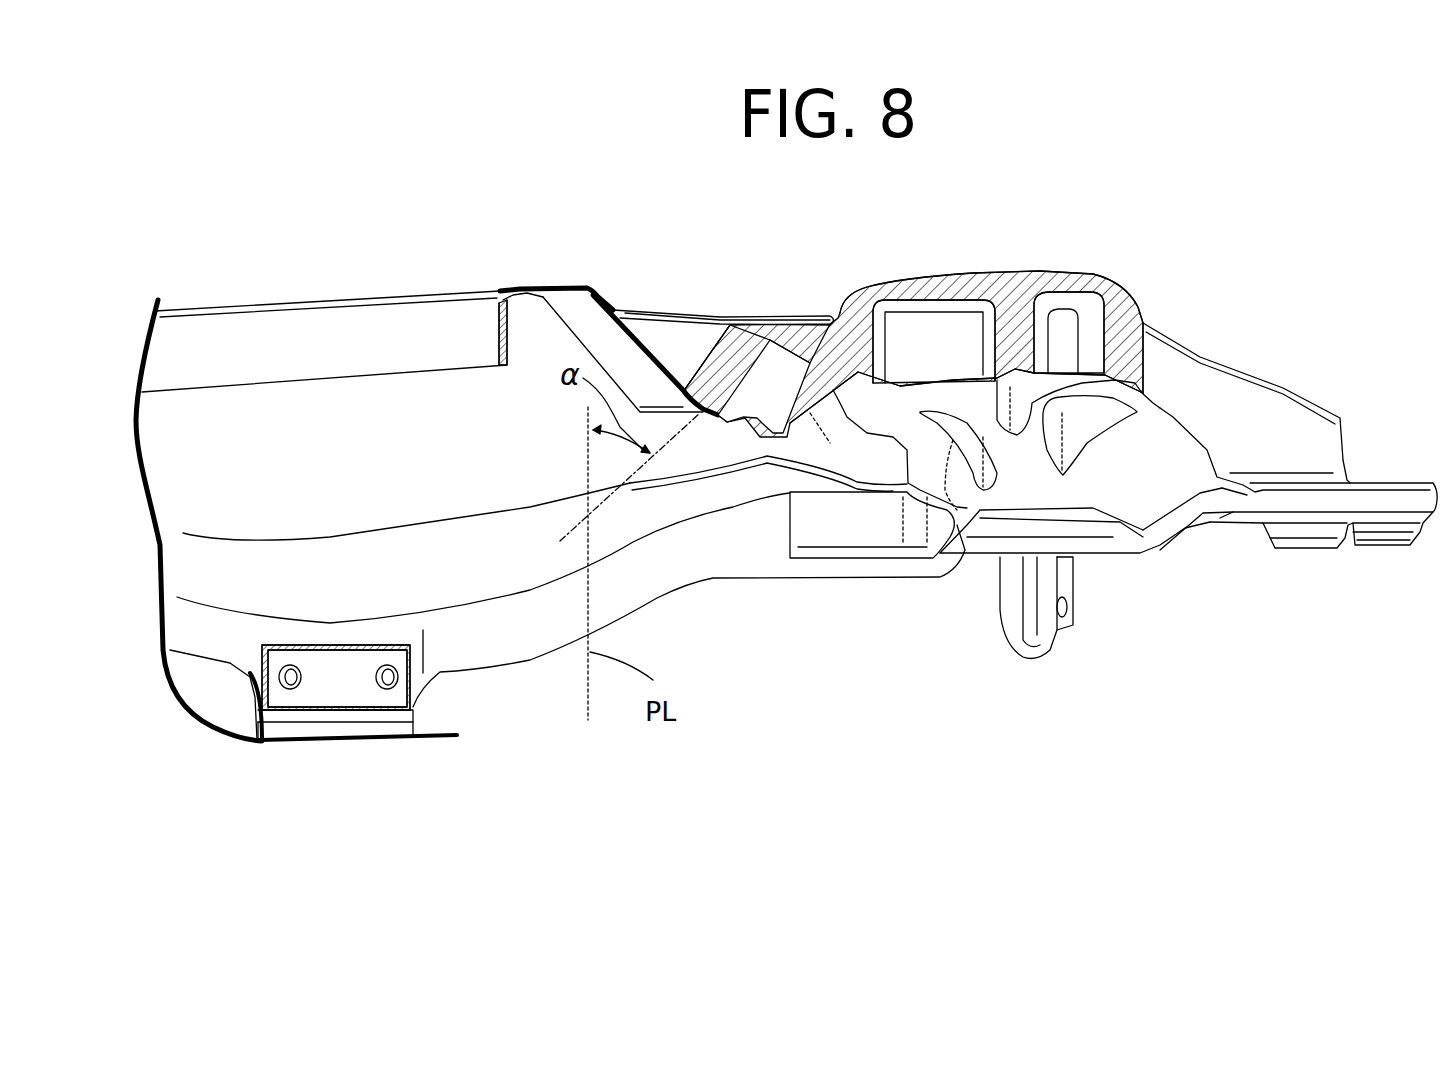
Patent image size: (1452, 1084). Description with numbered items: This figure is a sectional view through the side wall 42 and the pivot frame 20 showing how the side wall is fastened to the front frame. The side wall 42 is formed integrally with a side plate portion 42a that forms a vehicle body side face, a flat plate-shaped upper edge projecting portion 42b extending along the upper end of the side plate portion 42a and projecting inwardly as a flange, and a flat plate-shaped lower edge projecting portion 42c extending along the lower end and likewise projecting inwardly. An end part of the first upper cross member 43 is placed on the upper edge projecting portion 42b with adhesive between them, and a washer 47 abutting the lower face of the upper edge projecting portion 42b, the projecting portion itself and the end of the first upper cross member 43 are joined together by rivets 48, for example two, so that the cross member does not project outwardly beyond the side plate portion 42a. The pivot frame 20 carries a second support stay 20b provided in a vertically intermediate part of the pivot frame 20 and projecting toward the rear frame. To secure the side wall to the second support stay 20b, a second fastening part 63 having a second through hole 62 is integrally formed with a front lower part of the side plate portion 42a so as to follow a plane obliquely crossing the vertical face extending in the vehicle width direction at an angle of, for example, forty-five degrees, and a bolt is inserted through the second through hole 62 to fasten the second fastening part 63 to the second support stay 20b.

The pivot frame 20 is at (1267, 410).
The second support stay 20b is at (758, 410).
The side wall 42 is at (460, 287).
The side plate portion 42a is at (655, 306).
The upper edge projecting portion 42b is at (483, 640).
The lower edge projecting portion 42c is at (365, 345).
The first upper cross member 43 is at (297, 728).
The washer 47 is at (345, 698).
The rivets 48 is at (293, 668).
The second through hole 62 is at (757, 348).
The second fastening part 63 is at (782, 323).